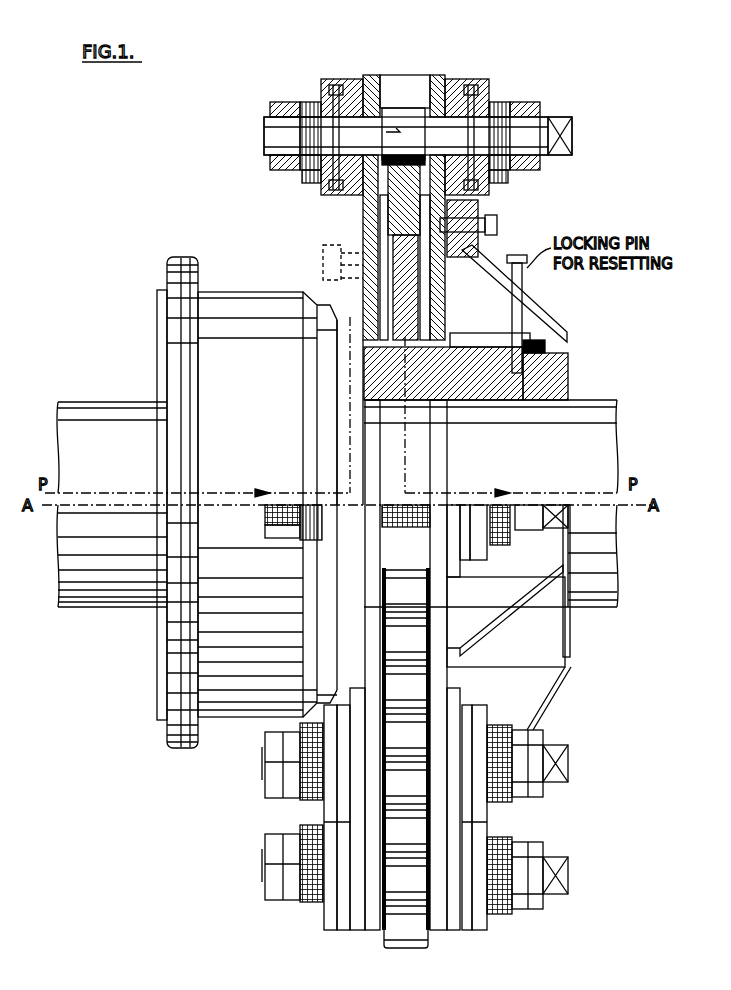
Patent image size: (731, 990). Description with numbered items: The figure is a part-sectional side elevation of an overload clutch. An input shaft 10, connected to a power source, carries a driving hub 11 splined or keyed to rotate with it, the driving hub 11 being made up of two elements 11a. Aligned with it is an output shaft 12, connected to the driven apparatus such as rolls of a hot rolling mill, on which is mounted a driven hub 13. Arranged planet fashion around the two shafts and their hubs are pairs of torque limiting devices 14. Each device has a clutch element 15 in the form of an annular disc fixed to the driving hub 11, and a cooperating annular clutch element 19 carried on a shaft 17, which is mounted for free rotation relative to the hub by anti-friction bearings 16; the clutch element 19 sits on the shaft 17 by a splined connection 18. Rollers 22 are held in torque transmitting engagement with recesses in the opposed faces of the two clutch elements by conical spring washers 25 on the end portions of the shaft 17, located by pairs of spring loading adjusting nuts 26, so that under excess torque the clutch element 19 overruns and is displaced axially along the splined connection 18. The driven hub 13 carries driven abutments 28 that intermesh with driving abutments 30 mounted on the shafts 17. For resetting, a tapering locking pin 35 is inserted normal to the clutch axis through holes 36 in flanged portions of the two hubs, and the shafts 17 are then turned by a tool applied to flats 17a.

The input shaft 10 is at (66, 566).
The driving hub 11 is at (382, 220).
The elements of driving hub 11a is at (363, 296).
The output shaft 12 is at (606, 405).
The driven hub 13 is at (450, 345).
The torque limiting device 14 is at (290, 74).
The clutch element 15 is at (343, 86).
The anti-friction bearings 16 is at (372, 85).
The shaft 17 is at (403, 118).
The flats 17a is at (550, 122).
The splined connection 18 is at (312, 120).
The clutch element 19 is at (314, 104).
The rollers 22 is at (336, 85).
The conical spring washers 25 is at (310, 180).
The spring loading adjusting nuts 26 is at (278, 103).
The driven abutment 28 is at (323, 262).
The driving abutment 30 is at (388, 214).
The tapering locking pin 35 is at (525, 320).
The holes 36 is at (556, 358).